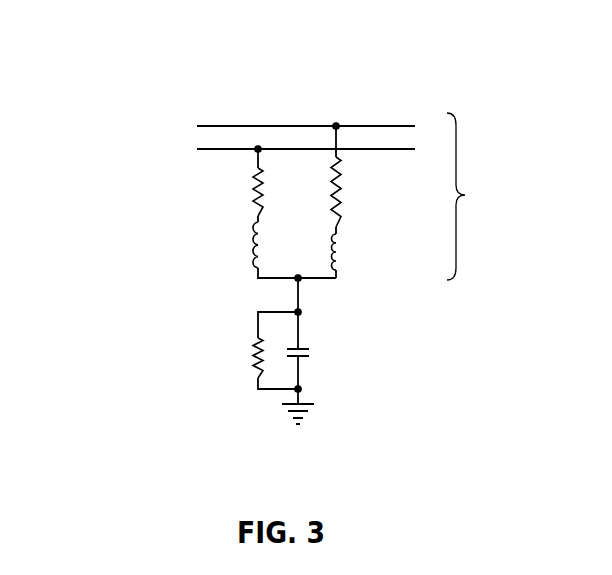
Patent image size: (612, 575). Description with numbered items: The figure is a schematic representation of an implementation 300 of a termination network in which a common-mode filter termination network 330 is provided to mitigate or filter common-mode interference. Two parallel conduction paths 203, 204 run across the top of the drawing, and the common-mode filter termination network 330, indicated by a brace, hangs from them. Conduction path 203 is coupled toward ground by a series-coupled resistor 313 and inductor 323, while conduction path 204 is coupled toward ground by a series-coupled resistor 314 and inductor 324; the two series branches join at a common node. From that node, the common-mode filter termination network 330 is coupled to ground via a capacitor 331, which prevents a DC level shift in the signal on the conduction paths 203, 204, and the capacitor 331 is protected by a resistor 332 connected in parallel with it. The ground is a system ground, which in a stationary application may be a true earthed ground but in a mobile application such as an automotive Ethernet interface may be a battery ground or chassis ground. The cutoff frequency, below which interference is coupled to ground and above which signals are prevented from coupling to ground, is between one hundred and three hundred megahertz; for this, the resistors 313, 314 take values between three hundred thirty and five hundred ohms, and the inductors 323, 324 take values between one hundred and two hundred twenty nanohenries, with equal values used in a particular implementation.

The implementation of termination network 300 is at (138, 52).
The conduction path 203 is at (228, 125).
The conduction path 204 is at (228, 151).
The resistor 313 is at (340, 172).
The resistor 314 is at (265, 173).
The inductor 323 is at (339, 238).
The inductor 324 is at (253, 237).
The common-mode filter termination network 330 is at (483, 196).
The capacitor 331 is at (303, 348).
The resistor 332 is at (251, 365).